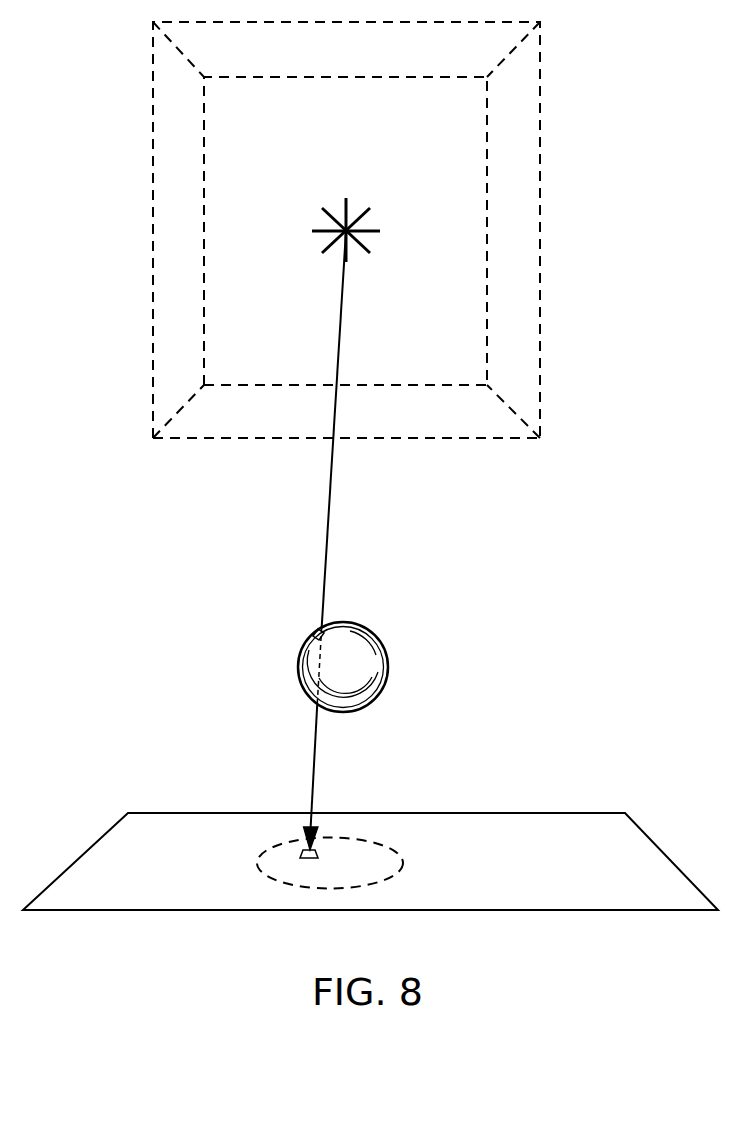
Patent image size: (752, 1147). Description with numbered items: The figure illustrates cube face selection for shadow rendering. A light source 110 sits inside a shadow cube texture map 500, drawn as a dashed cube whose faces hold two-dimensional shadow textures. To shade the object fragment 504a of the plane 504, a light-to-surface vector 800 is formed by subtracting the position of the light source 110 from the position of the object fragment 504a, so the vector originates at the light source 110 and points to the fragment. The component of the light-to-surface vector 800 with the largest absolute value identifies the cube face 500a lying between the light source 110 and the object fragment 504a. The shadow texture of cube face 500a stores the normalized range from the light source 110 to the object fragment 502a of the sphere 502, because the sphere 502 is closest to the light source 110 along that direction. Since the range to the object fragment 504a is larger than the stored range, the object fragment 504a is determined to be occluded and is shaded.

The light source 110 is at (318, 229).
The shadow cube texture map 500 is at (541, 216).
The cube face 500a is at (244, 413).
The light-to-surface vector 800 is at (328, 549).
The sphere 502 is at (388, 660).
The object fragment 502a is at (318, 632).
The plane 504 is at (168, 851).
The object fragment 504a is at (302, 852).